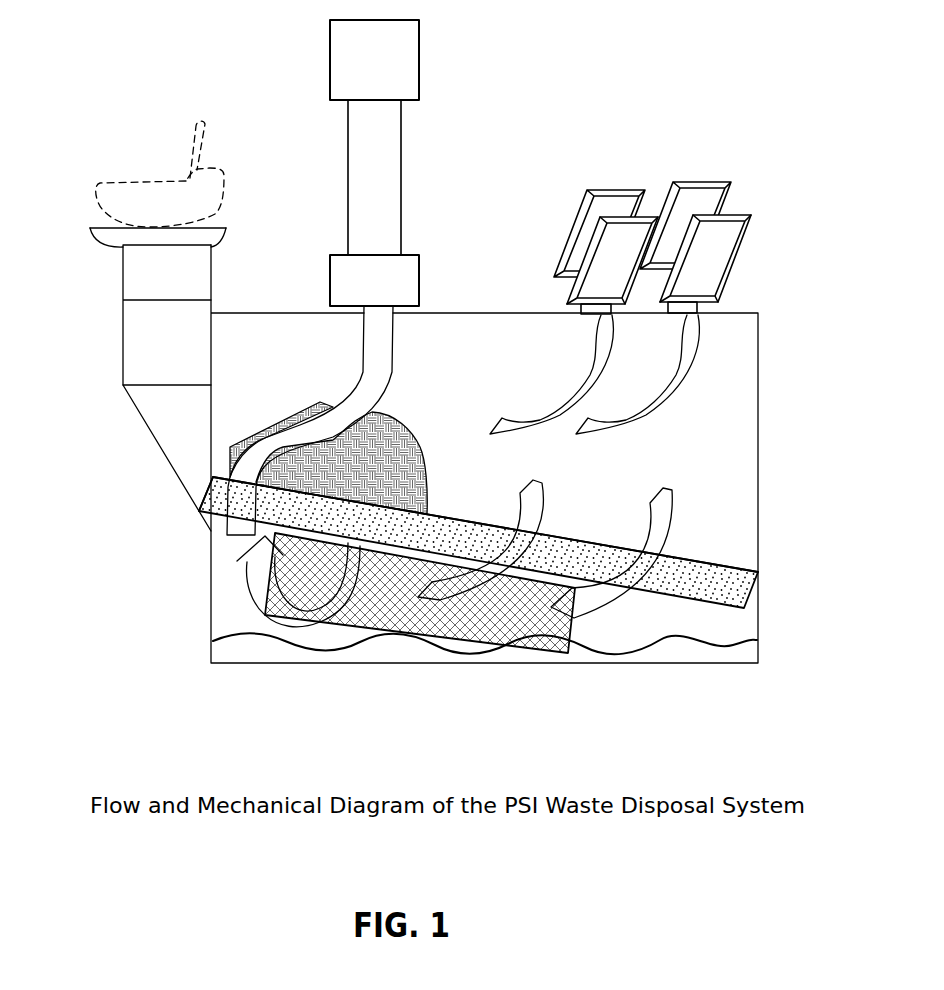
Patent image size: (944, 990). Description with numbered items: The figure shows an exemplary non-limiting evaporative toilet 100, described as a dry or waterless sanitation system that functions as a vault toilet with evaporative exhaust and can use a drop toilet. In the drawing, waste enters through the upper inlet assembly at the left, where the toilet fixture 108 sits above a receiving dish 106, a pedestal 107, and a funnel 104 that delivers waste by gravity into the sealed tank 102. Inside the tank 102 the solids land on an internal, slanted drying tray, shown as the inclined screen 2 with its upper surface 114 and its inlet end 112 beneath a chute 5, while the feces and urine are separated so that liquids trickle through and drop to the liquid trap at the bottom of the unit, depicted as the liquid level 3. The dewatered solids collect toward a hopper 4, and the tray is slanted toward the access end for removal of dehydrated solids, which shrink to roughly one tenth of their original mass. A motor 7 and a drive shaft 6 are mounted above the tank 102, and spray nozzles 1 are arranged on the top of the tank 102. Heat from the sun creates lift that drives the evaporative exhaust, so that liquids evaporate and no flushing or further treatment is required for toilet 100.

The evaporative toilet 100 is at (130, 112).
The toilet 108 is at (236, 176).
The receiving dish 106 is at (112, 243).
The pedestal / inlet pipe 107 is at (143, 281).
The funnel 104 is at (134, 345).
The tank 102 is at (733, 415).
The motor 7 is at (380, 69).
The drive shaft 6 is at (388, 195).
The chute 5 is at (363, 395).
The screen conveyor 2 is at (697, 566).
The screen surface 114 is at (758, 588).
The screen inlet end 112 is at (205, 496).
The collection hopper 4 is at (385, 598).
The liquid / water level 3 is at (640, 650).
The spray nozzles 1 is at (744, 198).